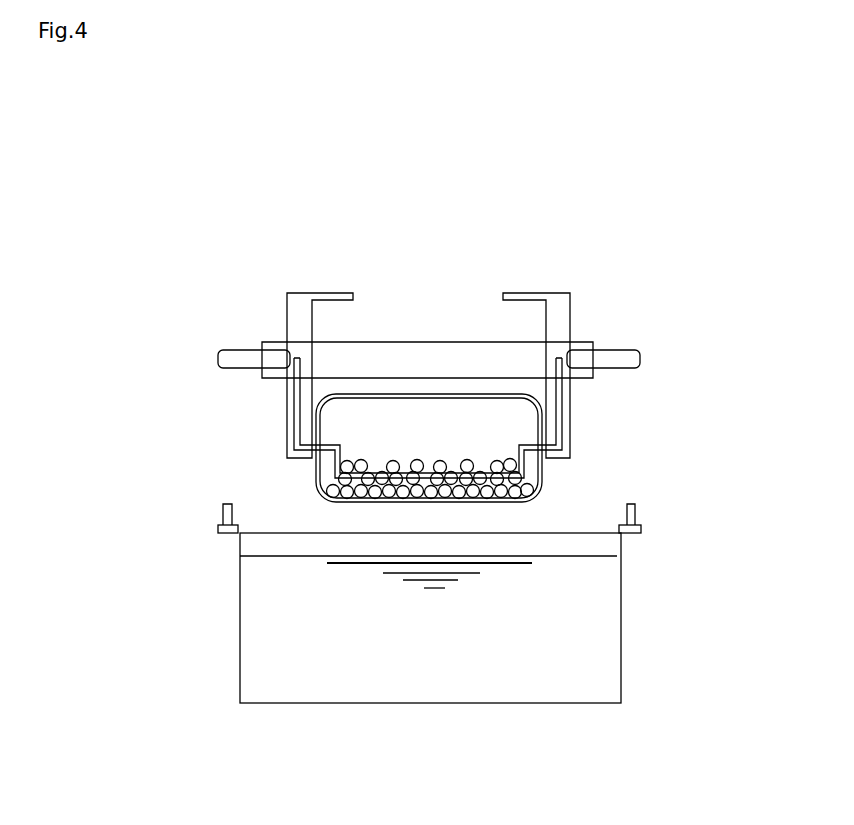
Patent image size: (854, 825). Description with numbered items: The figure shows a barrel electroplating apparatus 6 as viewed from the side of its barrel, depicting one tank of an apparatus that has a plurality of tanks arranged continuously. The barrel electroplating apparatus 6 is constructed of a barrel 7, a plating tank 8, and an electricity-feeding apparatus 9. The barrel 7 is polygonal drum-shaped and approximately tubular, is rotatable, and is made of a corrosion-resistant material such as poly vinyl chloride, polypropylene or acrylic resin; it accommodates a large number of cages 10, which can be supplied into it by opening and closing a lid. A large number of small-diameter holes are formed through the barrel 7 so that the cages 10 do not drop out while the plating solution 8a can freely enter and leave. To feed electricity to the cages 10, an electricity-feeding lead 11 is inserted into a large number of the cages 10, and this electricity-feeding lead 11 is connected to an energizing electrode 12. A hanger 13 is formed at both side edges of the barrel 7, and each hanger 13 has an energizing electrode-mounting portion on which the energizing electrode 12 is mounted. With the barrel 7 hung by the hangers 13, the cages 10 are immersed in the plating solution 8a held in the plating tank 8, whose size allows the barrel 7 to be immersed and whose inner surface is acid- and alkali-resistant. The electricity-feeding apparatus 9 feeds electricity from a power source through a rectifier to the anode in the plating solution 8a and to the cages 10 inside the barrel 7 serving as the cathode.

The barrel electroplating apparatus 6 is at (625, 308).
The barrel 7 is at (528, 428).
The plating tank 8 is at (621, 633).
The plating solution 8a is at (254, 657).
The electricity-feeding apparatus 9 is at (220, 521).
The cages 10 is at (527, 489).
The electricity-feeding lead 11 is at (313, 386).
The energizing electrode 12 is at (246, 351).
The hanger 13 is at (298, 300).